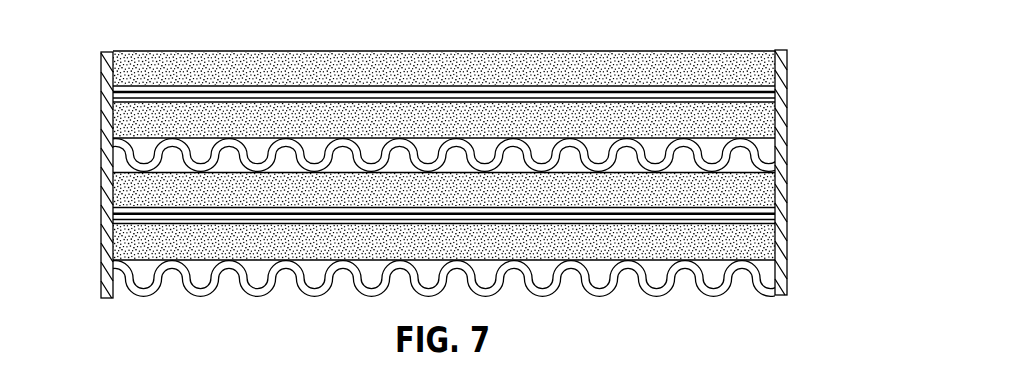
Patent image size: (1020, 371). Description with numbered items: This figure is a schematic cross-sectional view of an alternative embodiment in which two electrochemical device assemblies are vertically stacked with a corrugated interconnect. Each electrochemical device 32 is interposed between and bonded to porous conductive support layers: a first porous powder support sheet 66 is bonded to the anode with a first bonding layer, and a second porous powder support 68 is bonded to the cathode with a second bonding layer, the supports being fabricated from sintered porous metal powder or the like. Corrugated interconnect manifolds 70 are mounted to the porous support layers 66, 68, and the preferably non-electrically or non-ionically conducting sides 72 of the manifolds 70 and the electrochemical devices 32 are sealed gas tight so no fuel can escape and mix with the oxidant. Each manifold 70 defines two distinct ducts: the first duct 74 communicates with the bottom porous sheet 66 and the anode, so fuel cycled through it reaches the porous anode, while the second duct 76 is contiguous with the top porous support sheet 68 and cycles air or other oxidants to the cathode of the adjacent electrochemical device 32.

The electrochemical device 32 is at (696, 86).
The first porous powder support sheet 66 is at (512, 110).
The second porous powder support 68 is at (358, 63).
The corrugated interconnect manifold 70 is at (155, 146).
The sides of the manifolds 72 is at (100, 130).
The first duct 74 is at (718, 148).
The second duct 76 is at (762, 170).